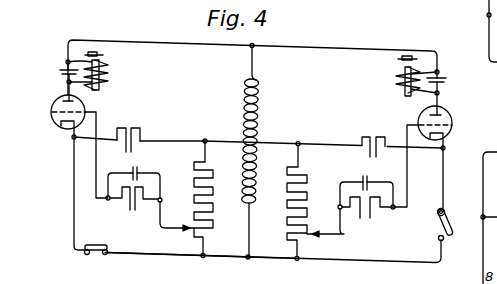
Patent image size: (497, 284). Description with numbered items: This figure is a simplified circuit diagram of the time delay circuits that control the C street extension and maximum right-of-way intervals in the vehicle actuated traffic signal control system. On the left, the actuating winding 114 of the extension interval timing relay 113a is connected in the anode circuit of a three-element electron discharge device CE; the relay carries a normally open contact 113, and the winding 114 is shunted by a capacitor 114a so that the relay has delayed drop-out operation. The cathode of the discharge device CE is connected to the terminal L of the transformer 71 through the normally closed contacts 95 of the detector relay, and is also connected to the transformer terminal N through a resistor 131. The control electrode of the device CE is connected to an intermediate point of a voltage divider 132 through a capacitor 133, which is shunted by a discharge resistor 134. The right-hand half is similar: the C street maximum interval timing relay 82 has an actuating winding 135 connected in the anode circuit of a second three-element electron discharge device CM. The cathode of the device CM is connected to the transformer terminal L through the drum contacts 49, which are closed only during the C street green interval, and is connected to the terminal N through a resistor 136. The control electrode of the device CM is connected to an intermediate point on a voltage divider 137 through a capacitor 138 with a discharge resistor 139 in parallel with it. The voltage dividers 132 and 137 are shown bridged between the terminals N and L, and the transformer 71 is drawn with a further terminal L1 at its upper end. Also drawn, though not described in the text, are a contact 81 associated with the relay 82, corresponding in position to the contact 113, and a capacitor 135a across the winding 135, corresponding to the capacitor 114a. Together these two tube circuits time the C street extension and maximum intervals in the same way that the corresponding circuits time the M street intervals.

The normally open contact 113 is at (103, 55).
The extension interval timing relay 113a is at (100, 88).
The actuating winding 114 is at (108, 73).
The capacitor 114a is at (63, 70).
The relay contact 81 is at (398, 59).
The C street maximum interval timing relay 82 is at (407, 94).
The actuating winding 135 is at (400, 78).
The condenser 135a is at (446, 80).
The transformer 71 is at (259, 118).
The resistor 131 is at (138, 135).
The voltage divider 132 is at (213, 215).
The capacitor 133 is at (139, 168).
The discharge resistor 134 is at (130, 211).
The resistor 136 is at (375, 137).
The voltage divider 137 is at (308, 185).
The capacitor 138 is at (366, 177).
The discharge resistor 139 is at (368, 219).
The normally closed contacts 95 is at (105, 255).
The drum contacts 49 is at (438, 228).
The three-element electron discharge device CE is at (86, 108).
The three-element electron discharge device CM is at (452, 120).
The line terminal L1 is at (263, 60).
The transformer terminal N is at (236, 134).
The transformer terminal L is at (256, 250).